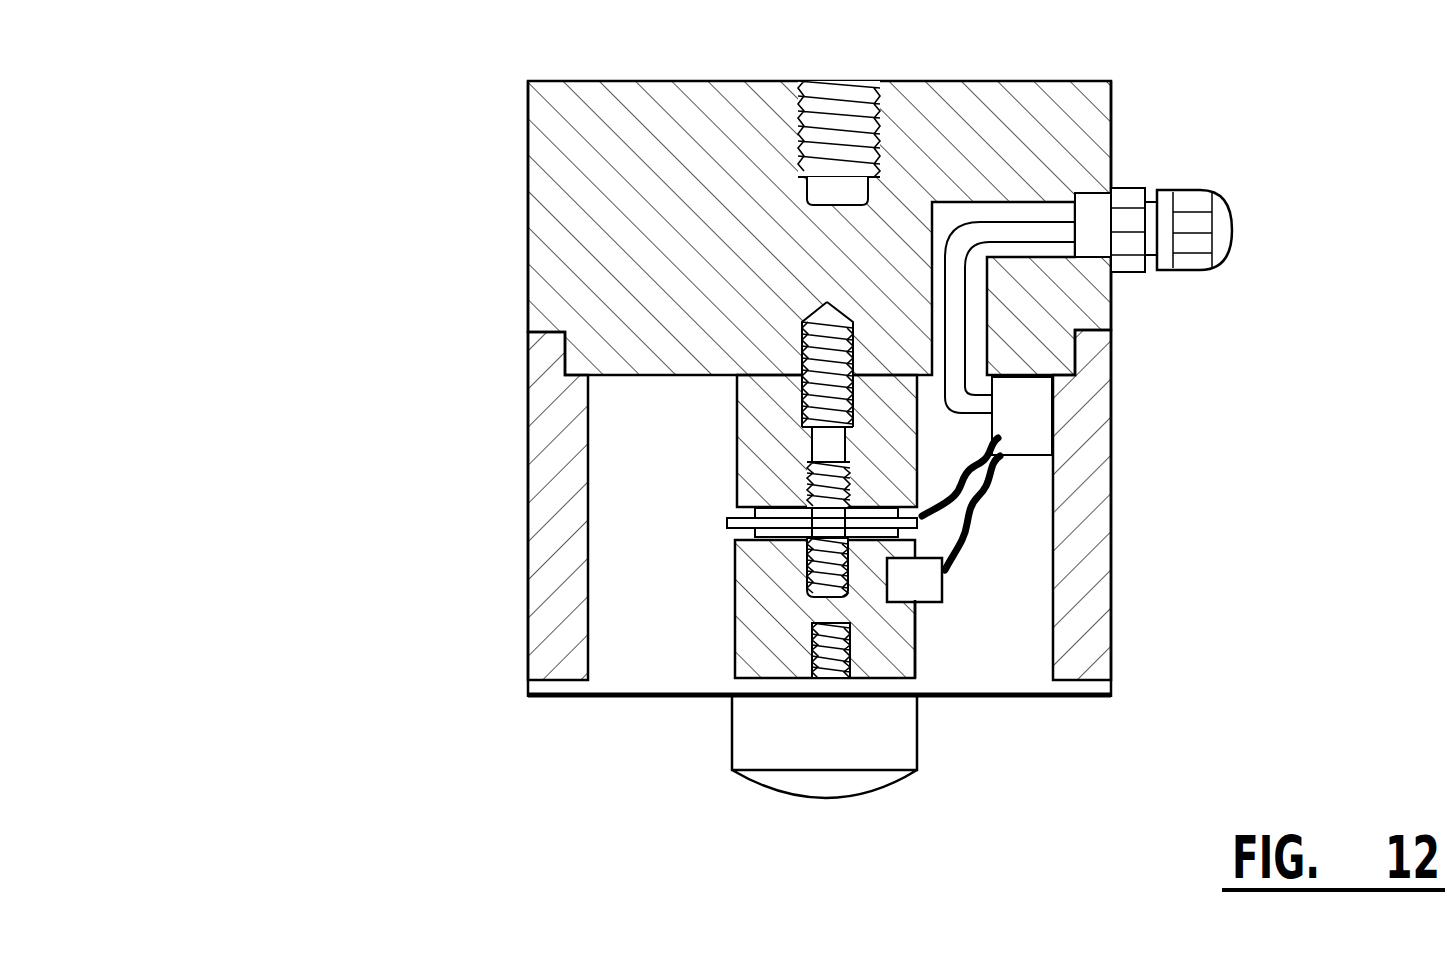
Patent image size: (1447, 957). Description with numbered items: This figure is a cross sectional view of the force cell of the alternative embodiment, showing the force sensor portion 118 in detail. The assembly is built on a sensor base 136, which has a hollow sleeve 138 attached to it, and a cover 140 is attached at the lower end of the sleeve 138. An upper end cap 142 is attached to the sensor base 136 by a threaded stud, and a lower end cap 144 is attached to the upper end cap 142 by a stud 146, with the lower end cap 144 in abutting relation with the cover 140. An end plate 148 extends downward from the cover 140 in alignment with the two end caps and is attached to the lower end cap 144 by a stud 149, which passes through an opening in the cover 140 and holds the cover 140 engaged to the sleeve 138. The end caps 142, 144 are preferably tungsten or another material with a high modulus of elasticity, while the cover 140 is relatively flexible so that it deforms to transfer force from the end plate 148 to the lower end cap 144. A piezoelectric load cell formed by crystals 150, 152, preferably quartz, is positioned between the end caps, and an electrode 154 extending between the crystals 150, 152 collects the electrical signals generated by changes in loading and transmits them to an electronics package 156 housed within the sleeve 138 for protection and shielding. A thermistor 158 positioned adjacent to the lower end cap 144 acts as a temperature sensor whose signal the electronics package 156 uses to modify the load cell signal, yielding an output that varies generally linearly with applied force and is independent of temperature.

The force sensor portion 118 is at (333, 513).
The sensor base 136 is at (528, 137).
The hollow sleeve 138 is at (1097, 547).
The cover 140 is at (1025, 697).
The upper end cap 142 is at (740, 442).
The lower end cap 144 is at (917, 645).
The stud 146 is at (810, 569).
The end plate 148 is at (825, 798).
The stud 149 is at (812, 652).
The crystal 150 is at (753, 513).
The crystal 152 is at (735, 540).
The electrode 154 is at (727, 522).
The electronics package 156 is at (1035, 417).
The thermistor 158 is at (938, 578).